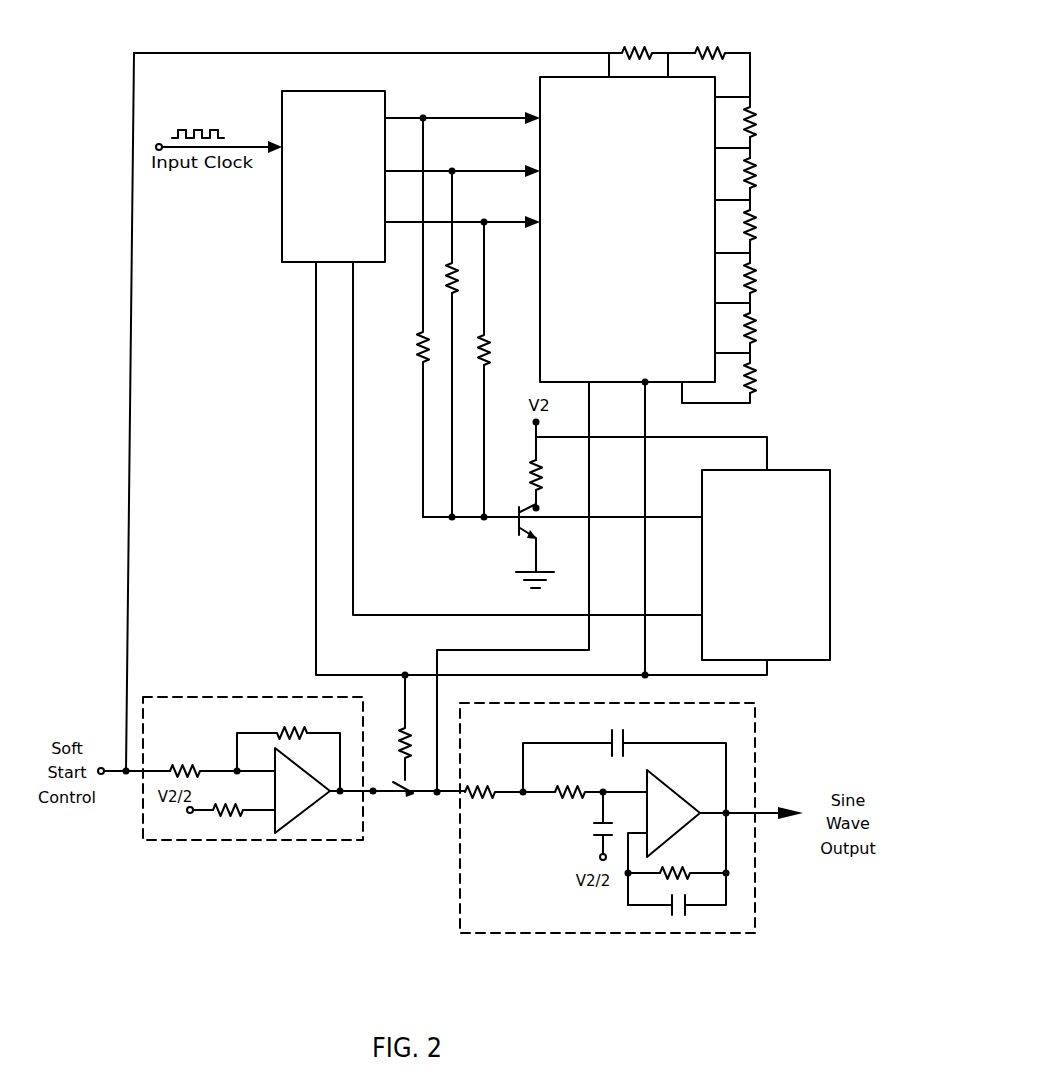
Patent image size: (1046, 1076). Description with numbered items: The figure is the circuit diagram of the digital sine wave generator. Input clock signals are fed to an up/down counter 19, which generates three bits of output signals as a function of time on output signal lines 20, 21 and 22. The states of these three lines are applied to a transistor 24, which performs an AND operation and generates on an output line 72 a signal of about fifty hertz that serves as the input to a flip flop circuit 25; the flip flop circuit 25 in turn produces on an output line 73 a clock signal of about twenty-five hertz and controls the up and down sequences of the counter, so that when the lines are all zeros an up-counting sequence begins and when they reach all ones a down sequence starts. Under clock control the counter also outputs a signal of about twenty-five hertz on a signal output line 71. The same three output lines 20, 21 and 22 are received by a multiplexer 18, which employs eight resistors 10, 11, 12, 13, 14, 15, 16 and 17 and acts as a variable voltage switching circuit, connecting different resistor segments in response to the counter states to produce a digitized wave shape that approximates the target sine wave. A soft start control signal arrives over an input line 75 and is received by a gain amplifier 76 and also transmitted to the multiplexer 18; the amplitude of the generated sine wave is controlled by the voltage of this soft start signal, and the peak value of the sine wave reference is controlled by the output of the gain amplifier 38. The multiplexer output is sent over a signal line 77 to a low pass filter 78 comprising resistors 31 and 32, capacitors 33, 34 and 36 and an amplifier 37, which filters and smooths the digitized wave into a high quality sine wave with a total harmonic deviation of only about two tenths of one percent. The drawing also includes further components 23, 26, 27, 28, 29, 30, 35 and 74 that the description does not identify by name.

The resistor 10 is at (632, 52).
The resistor 11 is at (697, 52).
The resistor 12 is at (755, 112).
The resistor 13 is at (755, 163).
The resistor 14 is at (755, 215).
The resistor 15 is at (755, 268).
The resistor 16 is at (755, 318).
The resistor 17 is at (755, 368).
The multiplexer 18 is at (627, 229).
The up/down counter 19 is at (333, 176).
The output signal line 20 is at (416, 337).
The output signal line 21 is at (454, 275).
The output signal line 22 is at (486, 342).
The resistor 23 is at (530, 460).
The transistor 24 is at (530, 528).
The flip flop circuit 25 is at (766, 565).
The resistor 26 is at (217, 808).
The resistor 27 is at (170, 768).
The feedback resistor 28 is at (283, 735).
The resistor 29 is at (402, 733).
The switch 30 is at (403, 800).
The resistor 31 is at (467, 790).
The resistor 32 is at (561, 797).
The capacitor 33 is at (625, 735).
The capacitor 34 is at (598, 823).
The resistor 35 is at (681, 867).
The capacitor 36 is at (684, 913).
The amplifier 37 is at (663, 790).
The gain amplifier 38 is at (298, 792).
The signal output line 71 is at (353, 398).
The output line 72 is at (661, 513).
The output line 73 is at (765, 683).
The line 74 is at (130, 398).
The input line 75 is at (131, 776).
The gain amplifier 76 is at (245, 832).
The signal line 77 is at (478, 650).
The low pass filter 78 is at (740, 767).